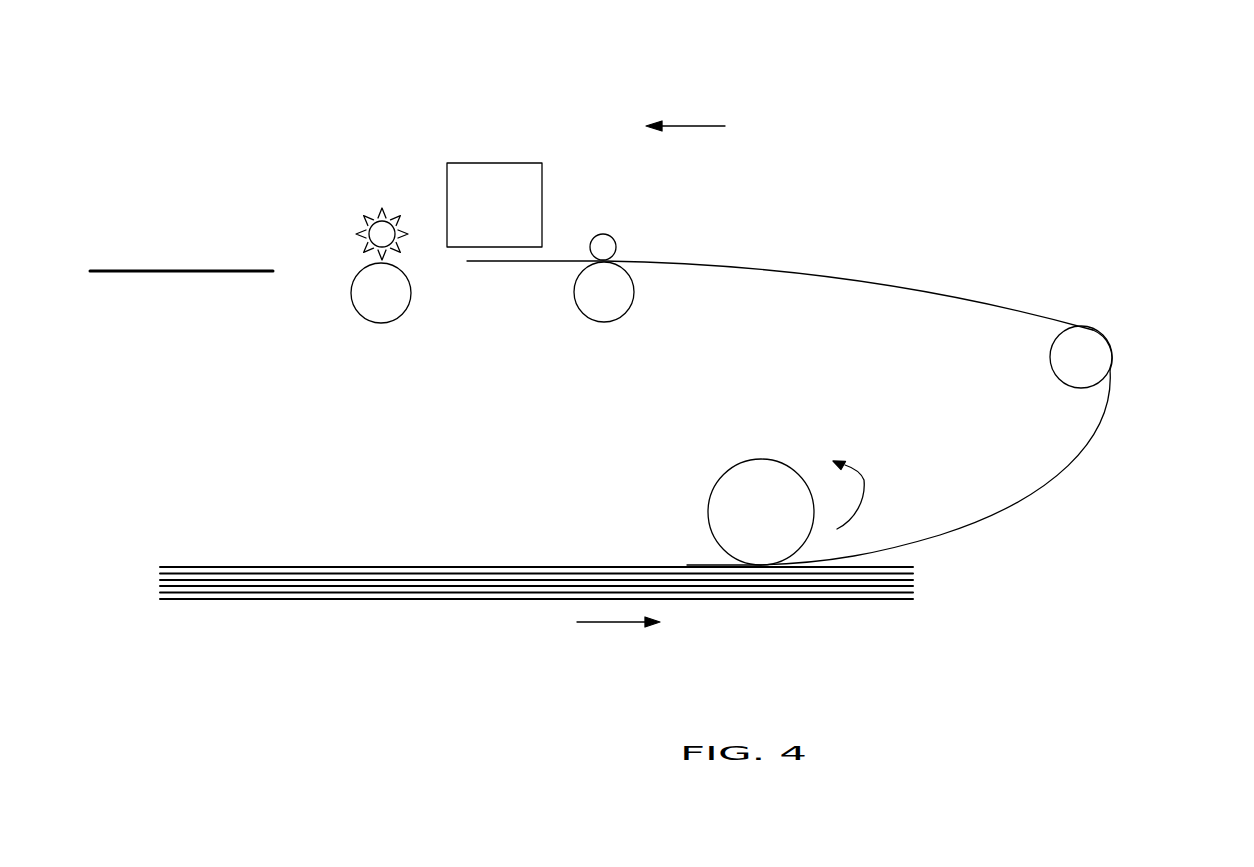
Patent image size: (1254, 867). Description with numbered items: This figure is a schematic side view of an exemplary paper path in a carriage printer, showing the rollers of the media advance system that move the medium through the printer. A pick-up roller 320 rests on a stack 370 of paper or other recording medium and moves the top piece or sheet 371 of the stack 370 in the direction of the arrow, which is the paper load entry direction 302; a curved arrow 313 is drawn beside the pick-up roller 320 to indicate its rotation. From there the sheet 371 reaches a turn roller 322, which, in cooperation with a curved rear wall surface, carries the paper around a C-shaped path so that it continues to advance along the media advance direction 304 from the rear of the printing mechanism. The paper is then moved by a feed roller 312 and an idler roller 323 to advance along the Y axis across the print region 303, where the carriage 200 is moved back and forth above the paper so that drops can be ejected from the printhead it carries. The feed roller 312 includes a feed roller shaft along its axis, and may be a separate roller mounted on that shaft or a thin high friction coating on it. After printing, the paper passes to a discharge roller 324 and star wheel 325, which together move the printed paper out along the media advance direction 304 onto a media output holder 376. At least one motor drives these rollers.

The carriage 200 is at (485, 163).
The paper load entry direction 302 is at (607, 626).
The print region 303 is at (512, 252).
The media advance direction 304 is at (692, 126).
The feed roller 312 is at (628, 297).
The rotation direction 313 is at (866, 478).
The pick-up roller 320 is at (725, 470).
The turn roller 322 is at (1093, 340).
The idler roller 323 is at (607, 232).
The discharge roller 324 is at (402, 298).
The star wheel 325 is at (374, 213).
The stack 370 is at (922, 585).
The sheet 371 is at (975, 527).
The media output holder 376 is at (180, 272).